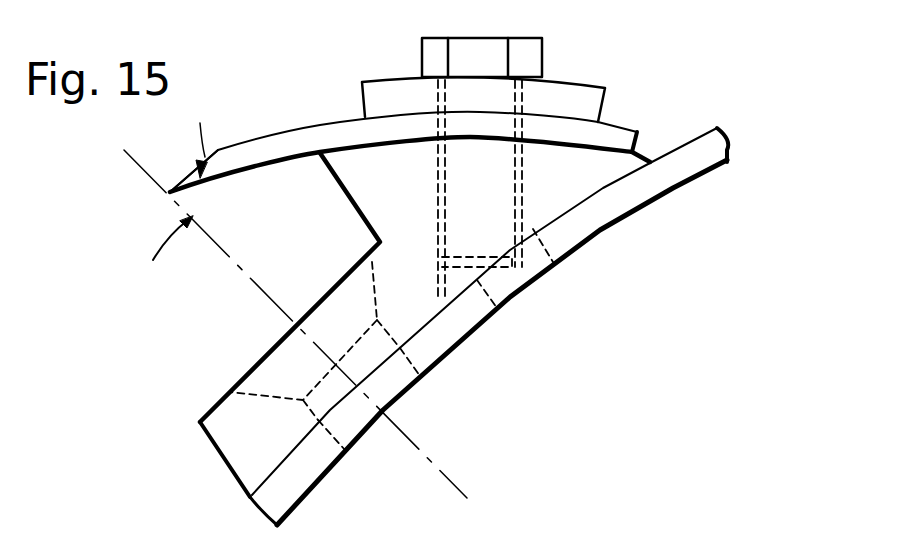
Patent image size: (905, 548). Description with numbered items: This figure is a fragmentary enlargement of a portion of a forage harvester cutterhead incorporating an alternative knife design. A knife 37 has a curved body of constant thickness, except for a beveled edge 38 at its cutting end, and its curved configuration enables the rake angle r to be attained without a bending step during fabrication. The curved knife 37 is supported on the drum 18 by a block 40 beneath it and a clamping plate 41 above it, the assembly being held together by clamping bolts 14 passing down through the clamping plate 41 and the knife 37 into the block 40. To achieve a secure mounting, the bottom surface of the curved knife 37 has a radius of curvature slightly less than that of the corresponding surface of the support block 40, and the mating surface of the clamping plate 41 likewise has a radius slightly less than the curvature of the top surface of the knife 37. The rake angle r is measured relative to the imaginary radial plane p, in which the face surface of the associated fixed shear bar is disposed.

The clamping bolts 14 is at (478, 53).
The clamping plate 41 is at (571, 88).
The drum 18 is at (680, 162).
The knife 37 is at (280, 153).
The block 40 is at (383, 180).
The beveled edge 38 is at (195, 180).
The radial plane p is at (243, 268).
The rake angle r is at (182, 191).